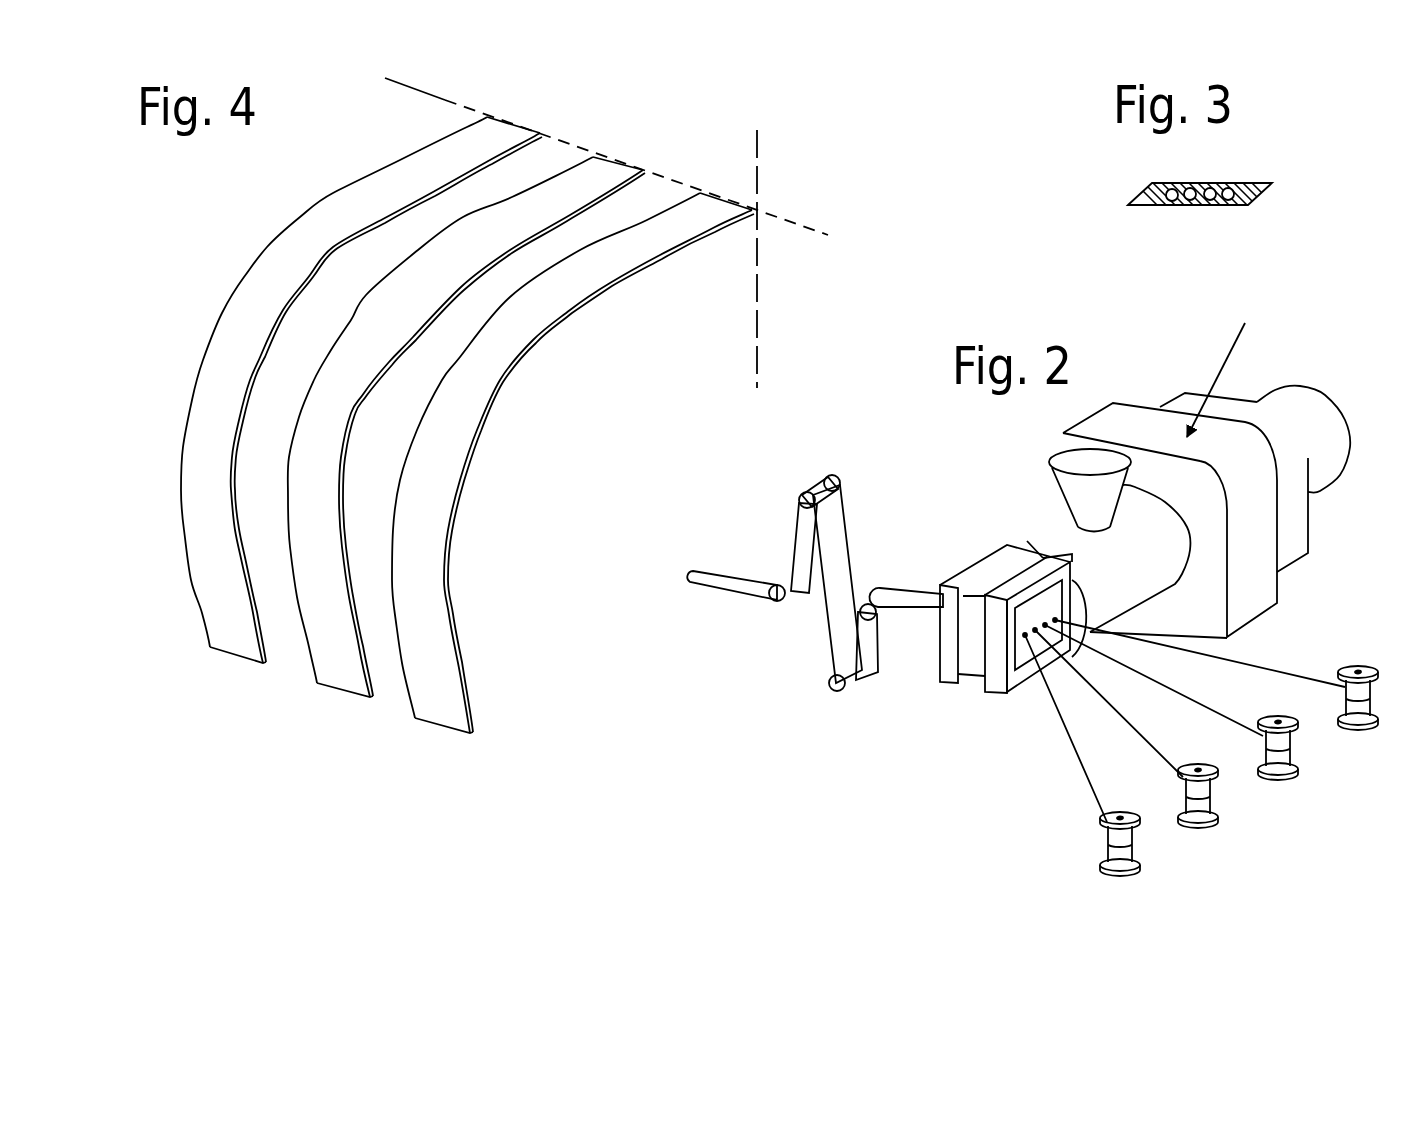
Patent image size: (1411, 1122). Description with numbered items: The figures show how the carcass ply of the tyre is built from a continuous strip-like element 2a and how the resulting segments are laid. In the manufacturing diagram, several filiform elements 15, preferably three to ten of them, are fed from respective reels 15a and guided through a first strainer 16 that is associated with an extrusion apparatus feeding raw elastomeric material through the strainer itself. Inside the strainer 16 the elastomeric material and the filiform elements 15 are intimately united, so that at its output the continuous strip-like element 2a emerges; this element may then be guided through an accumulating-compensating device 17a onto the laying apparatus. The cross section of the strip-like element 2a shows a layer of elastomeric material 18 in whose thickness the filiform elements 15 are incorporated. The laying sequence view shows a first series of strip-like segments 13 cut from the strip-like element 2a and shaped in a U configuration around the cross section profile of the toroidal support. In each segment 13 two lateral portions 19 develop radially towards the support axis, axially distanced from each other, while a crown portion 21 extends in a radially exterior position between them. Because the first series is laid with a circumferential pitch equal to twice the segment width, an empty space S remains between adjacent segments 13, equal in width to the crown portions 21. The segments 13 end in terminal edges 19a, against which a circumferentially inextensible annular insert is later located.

In FIG. 3, the continuous strip-like element 2a is at (1195, 197).
In FIG. 2, the continuous strip-like element 2a is at (835, 545).
In FIG. 4, the first series of strip-like segments 13 is at (258, 262).
In FIG. 3, the filiform elements 15 is at (1168, 202).
In FIG. 2, the filiform elements 15 is at (1093, 793).
In FIG. 2, the reels 15a is at (1117, 873).
In FIG. 2, the first strainer 16 is at (972, 573).
In FIG. 2, the accumulating-compensating device 17a is at (860, 486).
In FIG. 3, the layer of elastomeric material 18 is at (1155, 187).
In FIG. 4, the lateral portions 19 is at (205, 515).
In FIG. 4, the terminal edges 19a is at (228, 645).
In FIG. 4, the crown portion 21 is at (492, 133).
In FIG. 4, the empty space S is at (540, 160).